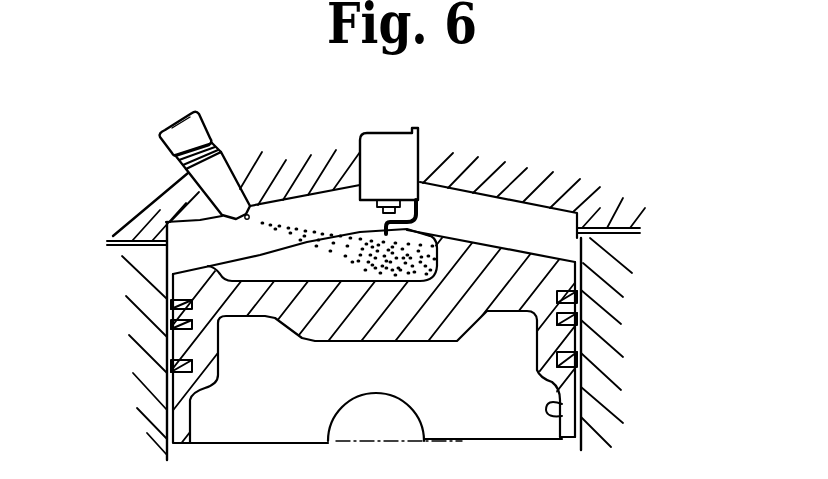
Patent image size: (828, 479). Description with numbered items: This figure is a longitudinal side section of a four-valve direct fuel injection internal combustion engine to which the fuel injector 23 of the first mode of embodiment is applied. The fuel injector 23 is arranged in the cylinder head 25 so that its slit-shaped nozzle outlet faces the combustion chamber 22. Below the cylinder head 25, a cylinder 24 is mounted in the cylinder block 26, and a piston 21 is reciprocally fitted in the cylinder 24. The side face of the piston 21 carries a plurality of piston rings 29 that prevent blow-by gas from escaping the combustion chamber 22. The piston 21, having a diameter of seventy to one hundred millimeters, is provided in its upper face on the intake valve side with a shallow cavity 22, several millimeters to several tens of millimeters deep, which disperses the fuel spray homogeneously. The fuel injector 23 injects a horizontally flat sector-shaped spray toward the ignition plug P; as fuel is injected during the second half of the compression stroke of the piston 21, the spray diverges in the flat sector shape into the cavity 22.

The piston 21 is at (581, 263).
The combustion chamber 22 is at (290, 270).
The fuel injector 23 is at (223, 182).
The cylinder 24 is at (580, 417).
The cylinder head 25 is at (200, 200).
The cylinder block 26 is at (152, 283).
The piston rings 29 is at (580, 318).
The ignition plug P is at (398, 167).